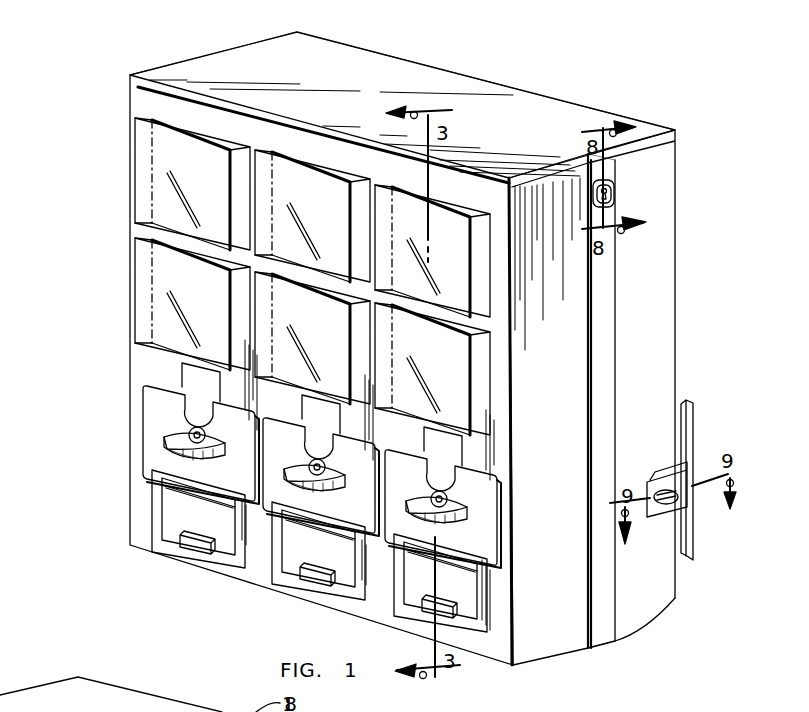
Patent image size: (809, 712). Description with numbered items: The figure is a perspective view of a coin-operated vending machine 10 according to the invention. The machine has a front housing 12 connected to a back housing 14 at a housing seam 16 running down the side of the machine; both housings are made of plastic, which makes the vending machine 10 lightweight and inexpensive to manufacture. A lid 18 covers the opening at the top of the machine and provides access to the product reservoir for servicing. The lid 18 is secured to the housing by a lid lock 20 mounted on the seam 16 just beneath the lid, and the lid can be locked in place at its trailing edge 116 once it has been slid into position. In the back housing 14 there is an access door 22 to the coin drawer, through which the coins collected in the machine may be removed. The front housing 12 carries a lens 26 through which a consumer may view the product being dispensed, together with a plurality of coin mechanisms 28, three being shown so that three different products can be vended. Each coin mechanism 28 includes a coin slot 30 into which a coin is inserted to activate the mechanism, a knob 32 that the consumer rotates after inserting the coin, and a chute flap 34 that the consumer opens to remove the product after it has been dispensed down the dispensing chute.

The vending machine 10 is at (138, 52).
The front housing 12 is at (541, 630).
The back housing 14 is at (643, 593).
The housing seam 16 is at (604, 646).
The lid 18 is at (462, 100).
The lid lock 20 is at (618, 194).
The access door 22 is at (693, 447).
The lens 26 is at (175, 184).
The coin mechanism 28 is at (163, 415).
The coin slot 30 is at (195, 373).
The knob 32 is at (170, 455).
The chute flap 34 is at (185, 515).
The trailing edge 116 is at (607, 168).